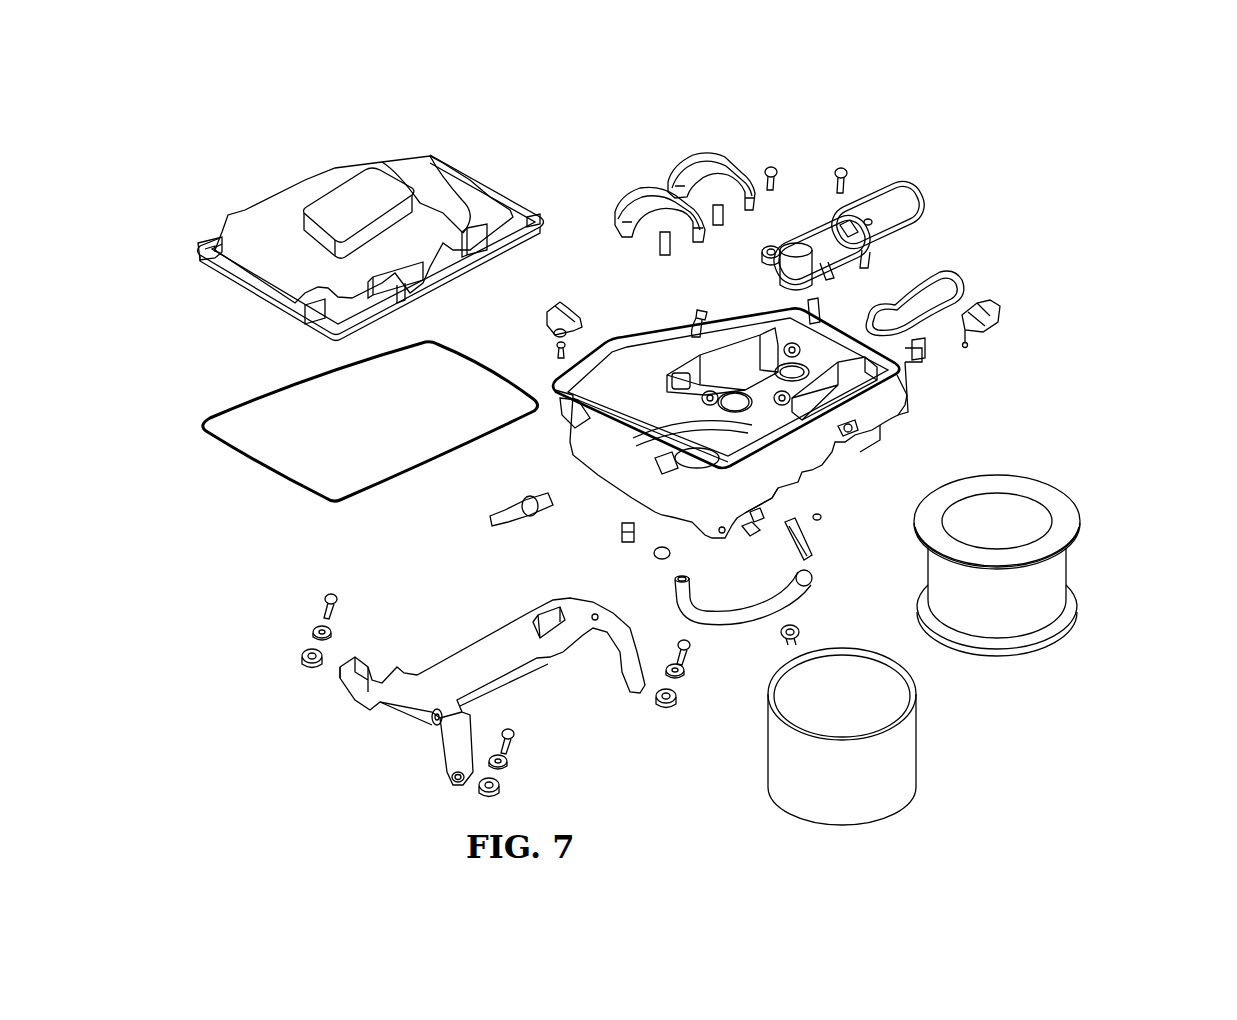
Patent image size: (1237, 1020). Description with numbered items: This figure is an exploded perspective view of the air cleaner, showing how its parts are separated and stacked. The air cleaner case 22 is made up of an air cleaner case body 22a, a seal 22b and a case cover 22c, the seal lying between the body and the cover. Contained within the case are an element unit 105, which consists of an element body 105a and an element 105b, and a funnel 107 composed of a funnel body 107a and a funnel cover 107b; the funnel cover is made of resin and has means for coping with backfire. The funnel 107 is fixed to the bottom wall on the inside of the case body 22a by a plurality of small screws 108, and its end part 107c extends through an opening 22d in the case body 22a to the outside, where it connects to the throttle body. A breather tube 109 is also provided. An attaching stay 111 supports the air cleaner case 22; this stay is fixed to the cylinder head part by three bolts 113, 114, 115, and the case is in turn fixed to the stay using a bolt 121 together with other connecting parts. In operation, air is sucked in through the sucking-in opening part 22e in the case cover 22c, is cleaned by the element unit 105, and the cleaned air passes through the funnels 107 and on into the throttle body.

The air cleaner case 22 is at (592, 100).
The air cleaner case body 22a is at (818, 447).
The seal 22b is at (240, 467).
The case cover 22c is at (286, 202).
The opening 22d is at (736, 405).
The sucking-in opening part 22e is at (398, 168).
The element unit 105 is at (1204, 651).
The element body 105a is at (900, 754).
The element 105b is at (1055, 572).
The funnel 107 is at (1023, 90).
The funnel body 107a is at (878, 206).
The funnel cover 107b is at (722, 157).
The end part 107c is at (790, 280).
The small screws 108 is at (777, 172).
The breather tube 109 is at (733, 620).
The attaching stay 111 is at (406, 695).
The bolt 113 is at (673, 643).
The bolt 114 is at (520, 747).
The bolt 115 is at (306, 605).
The bolt 121 is at (770, 508).